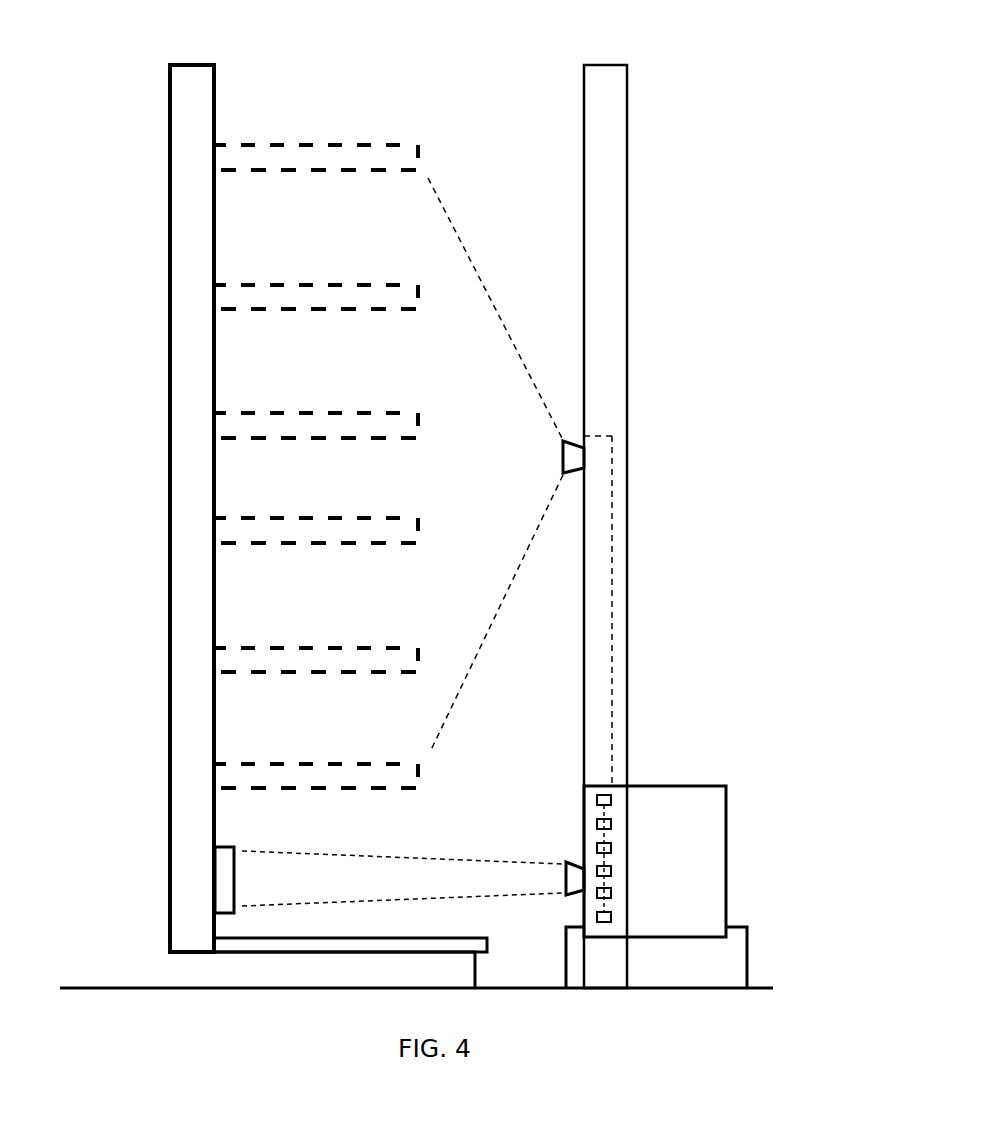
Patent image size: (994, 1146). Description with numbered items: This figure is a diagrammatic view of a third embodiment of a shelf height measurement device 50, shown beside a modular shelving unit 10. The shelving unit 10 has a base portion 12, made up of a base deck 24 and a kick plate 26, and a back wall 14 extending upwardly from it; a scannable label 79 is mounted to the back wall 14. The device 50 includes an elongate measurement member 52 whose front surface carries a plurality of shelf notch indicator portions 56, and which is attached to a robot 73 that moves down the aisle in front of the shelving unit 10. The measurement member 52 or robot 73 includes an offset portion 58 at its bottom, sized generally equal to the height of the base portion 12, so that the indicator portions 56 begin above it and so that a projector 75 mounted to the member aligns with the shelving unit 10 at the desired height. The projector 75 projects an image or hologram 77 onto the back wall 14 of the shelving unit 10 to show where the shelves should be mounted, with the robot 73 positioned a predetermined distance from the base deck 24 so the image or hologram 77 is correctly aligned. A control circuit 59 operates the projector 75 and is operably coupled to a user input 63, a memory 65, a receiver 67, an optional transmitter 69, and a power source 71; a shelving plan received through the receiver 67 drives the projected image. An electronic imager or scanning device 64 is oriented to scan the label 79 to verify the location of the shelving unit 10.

The modular shelving unit 10 is at (189, 486).
The base portion 12 is at (178, 968).
The back wall 14 is at (178, 468).
The base deck 24 is at (260, 976).
The kick plate 26 is at (476, 968).
The shelf height measurement device 50 is at (643, 509).
The elongate measurement member 52 is at (628, 320).
The shelf notch indicator portions 56 is at (606, 138).
The offset portion 58 is at (755, 938).
The control circuit 59 is at (699, 842).
The user input 63 is at (612, 824).
The electronic imager or scanning device 64 is at (566, 896).
The memory 65 is at (612, 848).
The receiver 67 is at (612, 871).
The transmitter 69 is at (612, 893).
The power source 71 is at (612, 917).
The robot 73 is at (711, 786).
The projector 75 is at (573, 440).
The image or hologram 77 is at (462, 243).
The label 79 is at (227, 846).